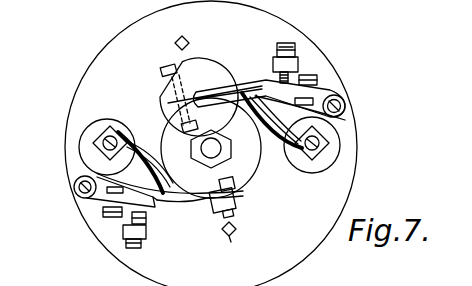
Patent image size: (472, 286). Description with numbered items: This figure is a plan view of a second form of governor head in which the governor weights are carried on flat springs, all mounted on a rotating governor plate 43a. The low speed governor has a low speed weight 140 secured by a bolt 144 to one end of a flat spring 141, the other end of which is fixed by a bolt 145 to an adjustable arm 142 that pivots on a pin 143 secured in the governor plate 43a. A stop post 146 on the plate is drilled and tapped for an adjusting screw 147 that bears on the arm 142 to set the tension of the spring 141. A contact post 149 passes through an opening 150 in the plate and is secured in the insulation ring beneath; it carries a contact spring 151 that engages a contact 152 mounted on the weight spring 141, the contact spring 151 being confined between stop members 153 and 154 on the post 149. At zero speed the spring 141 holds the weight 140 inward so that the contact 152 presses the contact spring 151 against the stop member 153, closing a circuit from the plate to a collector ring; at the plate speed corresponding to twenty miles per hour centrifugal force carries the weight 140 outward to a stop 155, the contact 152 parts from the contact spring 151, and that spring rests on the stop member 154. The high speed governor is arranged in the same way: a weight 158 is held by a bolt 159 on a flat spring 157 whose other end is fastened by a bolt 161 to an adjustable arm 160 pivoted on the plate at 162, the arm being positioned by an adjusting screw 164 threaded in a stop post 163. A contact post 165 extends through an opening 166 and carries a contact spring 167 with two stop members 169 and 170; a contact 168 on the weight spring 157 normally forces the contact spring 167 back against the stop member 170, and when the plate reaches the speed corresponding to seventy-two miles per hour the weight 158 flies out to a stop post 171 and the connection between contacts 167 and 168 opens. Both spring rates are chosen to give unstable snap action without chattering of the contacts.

The governor plate 43a is at (80, 213).
The low speed weight 140 is at (162, 89).
The flat spring 141 is at (269, 91).
The adjustable arm 142 is at (273, 68).
The pin 143 is at (346, 105).
The bolt 144 is at (172, 66).
The bolt 145 is at (312, 76).
The stop post 146 is at (280, 43).
The adjusting screw 147 is at (294, 45).
The contact post 149 is at (322, 166).
The opening 150 is at (303, 170).
The contact spring 151 is at (245, 148).
The contact 152 is at (226, 135).
The stop member 153 is at (226, 156).
The stop member 154 is at (226, 94).
The stop 155 is at (187, 36).
The flat spring 157 is at (203, 206).
The weight 158 is at (238, 203).
The bolt 159 is at (237, 213).
The adjustable arm 160 is at (148, 222).
The bolt 161 is at (109, 222).
The pivot 162 is at (74, 186).
The stop post 163 is at (142, 243).
The adjusting screw 164 is at (133, 249).
The contact post 165 is at (79, 137).
The opening 166 is at (107, 119).
The contact spring 167 is at (173, 182).
The contact 168 is at (175, 192).
The stop member 169 is at (157, 201).
The stop member 170 is at (153, 140).
The stop post 171 is at (234, 240).